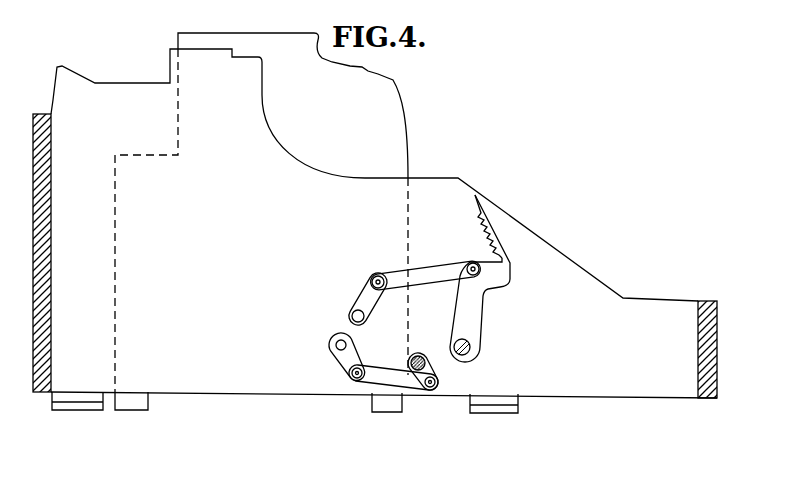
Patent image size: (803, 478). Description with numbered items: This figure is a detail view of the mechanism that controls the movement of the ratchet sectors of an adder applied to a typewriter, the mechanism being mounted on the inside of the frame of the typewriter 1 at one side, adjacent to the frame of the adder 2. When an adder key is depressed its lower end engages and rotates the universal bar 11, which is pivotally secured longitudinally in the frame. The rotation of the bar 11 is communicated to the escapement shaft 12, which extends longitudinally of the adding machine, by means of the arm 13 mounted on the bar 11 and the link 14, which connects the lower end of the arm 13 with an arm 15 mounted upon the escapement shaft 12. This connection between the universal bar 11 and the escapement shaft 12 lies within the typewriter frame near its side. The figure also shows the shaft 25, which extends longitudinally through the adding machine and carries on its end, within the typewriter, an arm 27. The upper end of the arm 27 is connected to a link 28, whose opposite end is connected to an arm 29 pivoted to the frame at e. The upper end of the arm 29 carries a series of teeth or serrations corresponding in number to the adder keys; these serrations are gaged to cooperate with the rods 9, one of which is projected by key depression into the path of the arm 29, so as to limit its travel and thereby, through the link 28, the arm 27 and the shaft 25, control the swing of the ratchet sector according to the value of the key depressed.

The frame of the typewriter 1 is at (568, 272).
The frame of the adder 2 is at (395, 125).
The rod 9 is at (475, 213).
The universal bar 11 is at (418, 374).
The escapement shaft 12 is at (334, 345).
The arm 13 is at (443, 372).
The link 14 is at (378, 378).
The arm 15 is at (346, 358).
The shaft 25 is at (350, 317).
The arm 27 is at (366, 292).
The link 28 is at (412, 275).
The arm 29 is at (476, 318).
The pivot e is at (474, 350).